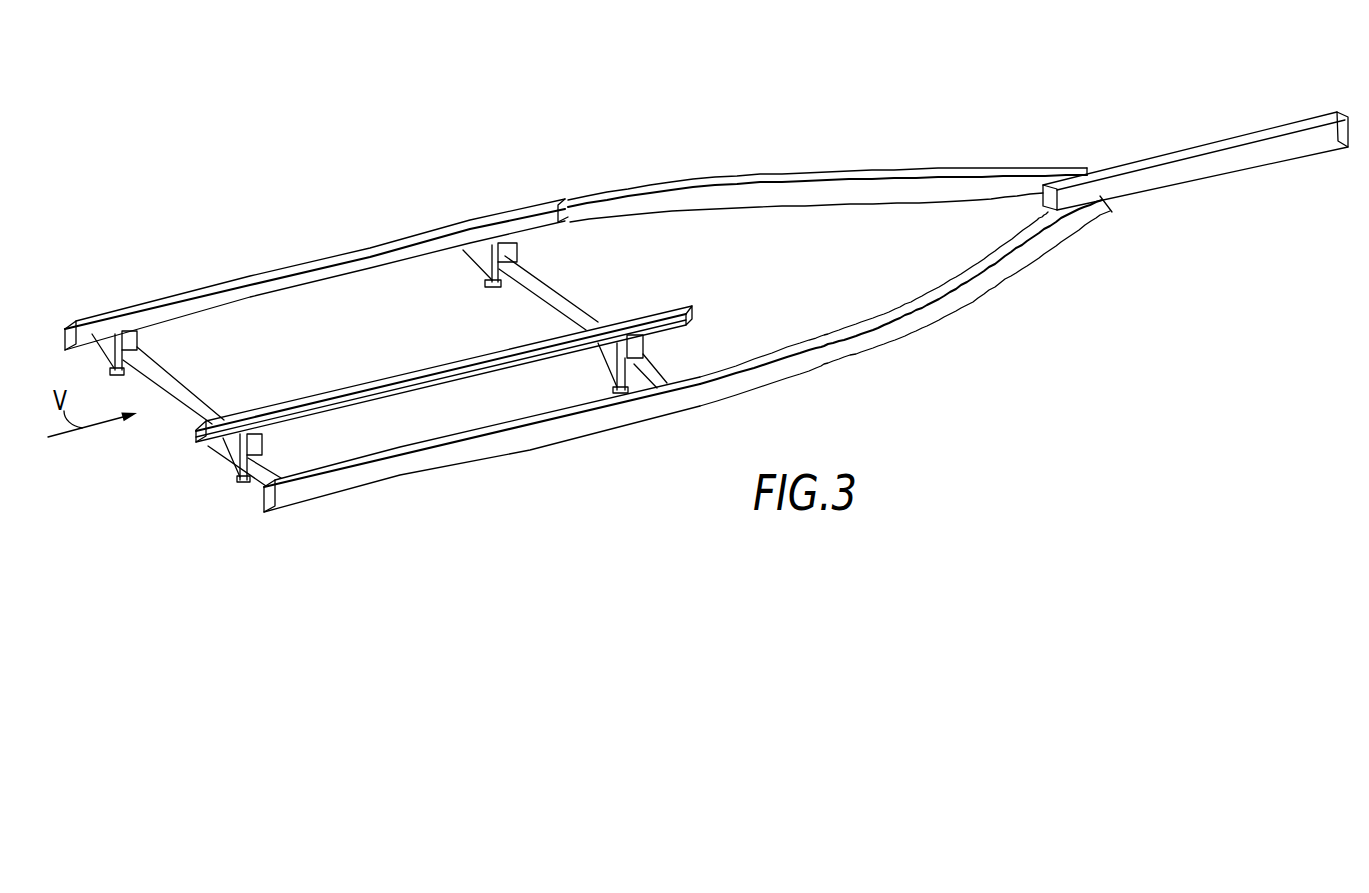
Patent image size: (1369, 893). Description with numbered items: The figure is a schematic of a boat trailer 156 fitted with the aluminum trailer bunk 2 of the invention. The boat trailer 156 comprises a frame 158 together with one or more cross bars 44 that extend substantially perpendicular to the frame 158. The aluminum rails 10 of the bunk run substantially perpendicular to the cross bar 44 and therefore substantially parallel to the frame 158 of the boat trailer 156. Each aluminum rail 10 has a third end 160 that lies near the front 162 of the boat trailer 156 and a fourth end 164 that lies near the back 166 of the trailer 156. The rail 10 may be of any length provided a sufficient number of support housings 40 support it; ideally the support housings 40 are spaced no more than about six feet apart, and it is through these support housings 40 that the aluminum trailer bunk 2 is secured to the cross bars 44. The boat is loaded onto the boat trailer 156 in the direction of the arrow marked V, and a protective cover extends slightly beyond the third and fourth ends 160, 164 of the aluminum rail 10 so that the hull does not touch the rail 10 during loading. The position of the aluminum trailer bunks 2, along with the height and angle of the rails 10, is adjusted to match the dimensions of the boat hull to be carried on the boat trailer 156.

The aluminum trailer bunk 2 is at (664, 348).
The aluminum rail 10 is at (692, 319).
The support housing 40 is at (262, 438).
The cross bar 44 is at (532, 299).
The boat trailer 156 is at (899, 137).
The frame 158 is at (881, 346).
The third end 160 is at (573, 211).
The front 162 is at (1253, 130).
The fourth end 164 is at (195, 442).
The back 166 is at (216, 460).